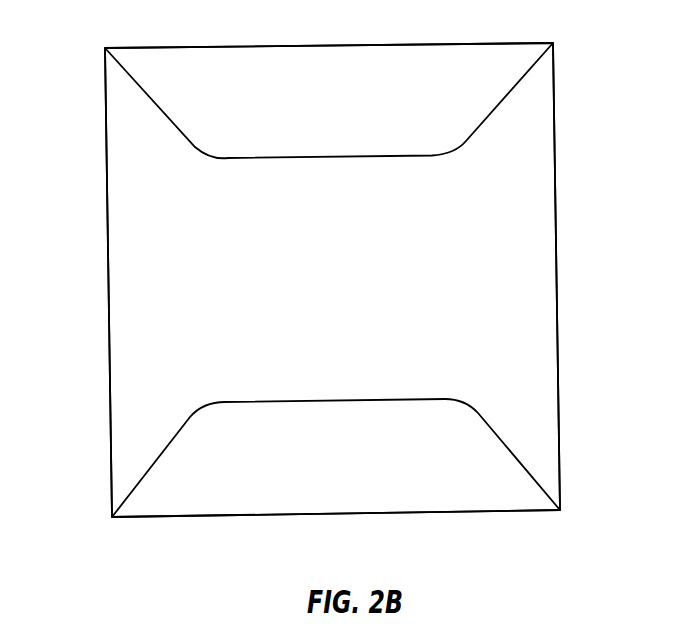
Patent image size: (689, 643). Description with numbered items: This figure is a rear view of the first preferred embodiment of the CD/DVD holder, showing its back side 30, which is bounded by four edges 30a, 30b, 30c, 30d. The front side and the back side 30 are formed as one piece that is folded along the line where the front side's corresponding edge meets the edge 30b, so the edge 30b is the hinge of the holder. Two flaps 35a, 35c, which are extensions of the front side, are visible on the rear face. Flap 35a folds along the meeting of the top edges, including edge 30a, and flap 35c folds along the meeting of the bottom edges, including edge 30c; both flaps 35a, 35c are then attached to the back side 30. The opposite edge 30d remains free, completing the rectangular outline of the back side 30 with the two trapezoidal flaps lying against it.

The back side 30 is at (537, 162).
The top edge of back side 30a is at (273, 45).
The side edge of back side 30b is at (107, 248).
The bottom edge of back side 30c is at (283, 515).
The side edge of back side 30d is at (558, 238).
The flap 35a is at (400, 77).
The flap 35c is at (403, 477).